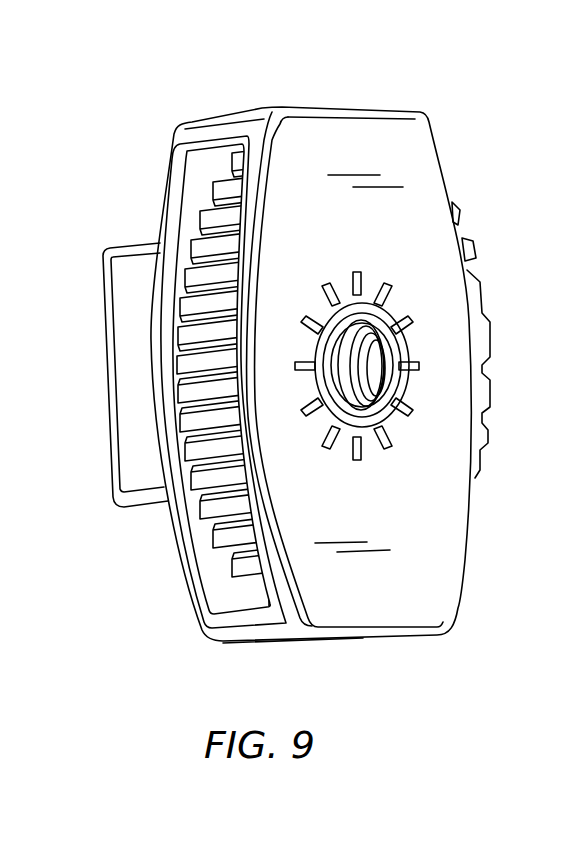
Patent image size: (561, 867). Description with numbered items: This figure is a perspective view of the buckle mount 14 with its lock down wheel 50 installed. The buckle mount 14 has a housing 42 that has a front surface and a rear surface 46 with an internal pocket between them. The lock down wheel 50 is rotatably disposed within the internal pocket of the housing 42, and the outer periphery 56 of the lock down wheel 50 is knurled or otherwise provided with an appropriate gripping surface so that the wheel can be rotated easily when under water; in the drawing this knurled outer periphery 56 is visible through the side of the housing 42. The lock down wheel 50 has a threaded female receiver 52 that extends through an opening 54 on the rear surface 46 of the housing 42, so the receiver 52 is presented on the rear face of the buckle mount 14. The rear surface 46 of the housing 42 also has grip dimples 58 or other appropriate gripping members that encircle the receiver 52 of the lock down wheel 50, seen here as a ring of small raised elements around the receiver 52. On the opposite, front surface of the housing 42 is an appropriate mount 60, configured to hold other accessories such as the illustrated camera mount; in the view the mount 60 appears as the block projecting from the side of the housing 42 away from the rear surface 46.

The buckle mount 14 is at (277, 354).
The housing 42 is at (306, 92).
The rear surface 46 is at (423, 183).
The lock down wheel 50 is at (200, 246).
The threaded female receiver 52 is at (380, 358).
The opening 54 is at (352, 432).
The outer periphery 56 is at (222, 530).
The grip dimples 58 is at (358, 272).
The mount 60 is at (130, 407).